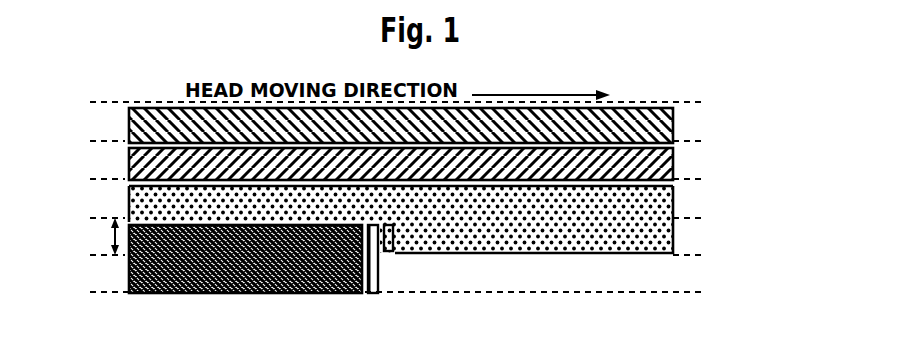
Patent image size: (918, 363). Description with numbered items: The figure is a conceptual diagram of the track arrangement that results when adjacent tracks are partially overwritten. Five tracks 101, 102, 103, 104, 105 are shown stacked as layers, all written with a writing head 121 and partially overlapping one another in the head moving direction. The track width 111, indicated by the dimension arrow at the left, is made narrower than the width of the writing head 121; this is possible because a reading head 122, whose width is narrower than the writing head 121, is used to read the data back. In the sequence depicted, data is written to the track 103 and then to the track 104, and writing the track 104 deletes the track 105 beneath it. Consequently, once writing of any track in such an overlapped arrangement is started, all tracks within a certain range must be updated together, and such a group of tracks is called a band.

The track 101 is at (673, 121).
The track 102 is at (673, 167).
The track 103 is at (673, 203).
The track 104 is at (673, 240).
The track 105 is at (672, 278).
The track width 111 is at (91, 236).
The writing head 121 is at (377, 295).
The reading head 122 is at (393, 252).